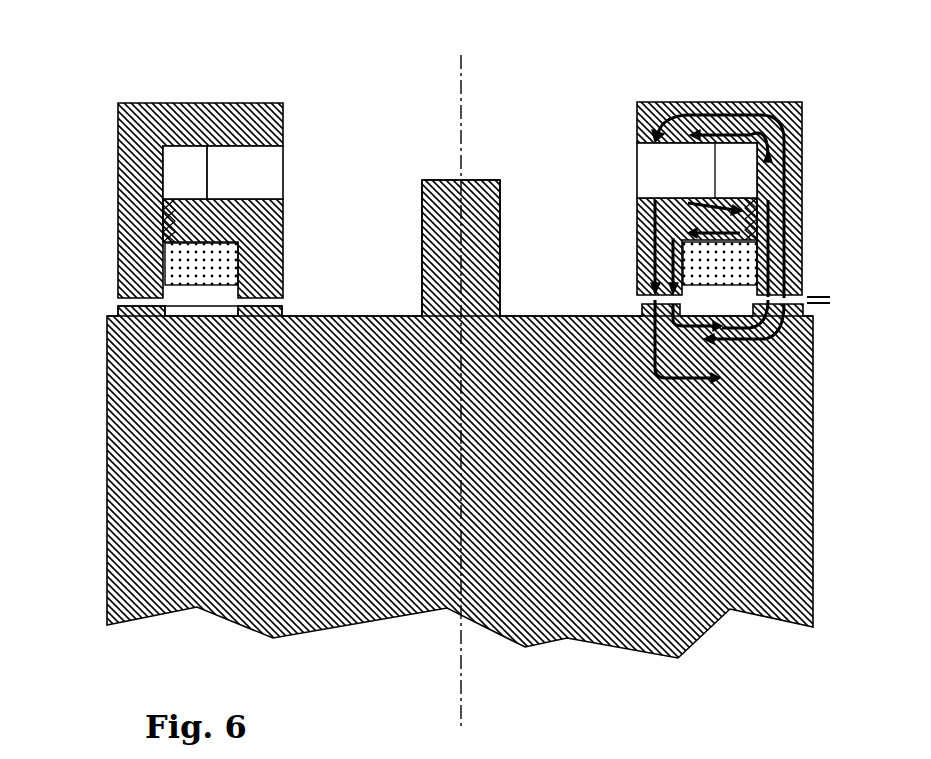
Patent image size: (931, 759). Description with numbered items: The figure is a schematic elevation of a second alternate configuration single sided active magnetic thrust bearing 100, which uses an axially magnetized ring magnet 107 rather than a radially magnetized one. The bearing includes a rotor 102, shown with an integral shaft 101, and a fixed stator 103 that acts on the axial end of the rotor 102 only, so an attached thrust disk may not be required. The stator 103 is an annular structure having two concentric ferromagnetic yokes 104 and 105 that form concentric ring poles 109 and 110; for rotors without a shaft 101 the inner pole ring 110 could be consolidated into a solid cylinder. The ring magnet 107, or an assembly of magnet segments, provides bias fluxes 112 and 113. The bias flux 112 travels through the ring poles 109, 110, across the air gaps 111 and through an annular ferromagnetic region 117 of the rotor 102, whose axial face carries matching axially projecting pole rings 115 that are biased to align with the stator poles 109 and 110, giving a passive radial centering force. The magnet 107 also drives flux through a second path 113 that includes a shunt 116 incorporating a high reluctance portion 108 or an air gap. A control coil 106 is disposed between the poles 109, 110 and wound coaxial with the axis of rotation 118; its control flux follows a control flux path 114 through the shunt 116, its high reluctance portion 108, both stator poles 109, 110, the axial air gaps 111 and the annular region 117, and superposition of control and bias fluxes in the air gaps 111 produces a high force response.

The single sided active magnetic thrust bearing 100 is at (400, 72).
The shaft 101 is at (480, 180).
The rotor 102 is at (572, 315).
The stator 103 is at (803, 88).
The ferromagnetic yoke 104 is at (118, 232).
The ferromagnetic yoke 105 is at (285, 237).
The control coil 106 is at (240, 266).
The axially magnetized ring magnet 107 is at (285, 172).
The high reluctance portion 108 is at (176, 205).
The ring pole 109 is at (132, 306).
The inner pole ring 110 is at (285, 305).
The air gap 111 is at (845, 295).
The bias flux 112 is at (790, 180).
The bias flux second path 113 is at (795, 207).
The control flux path 114 is at (790, 265).
The rotor pole rings 115 is at (252, 324).
The shunt 116 is at (223, 207).
The annular ferromagnetic region 117 is at (783, 318).
The axis of rotation 118 is at (464, 80).